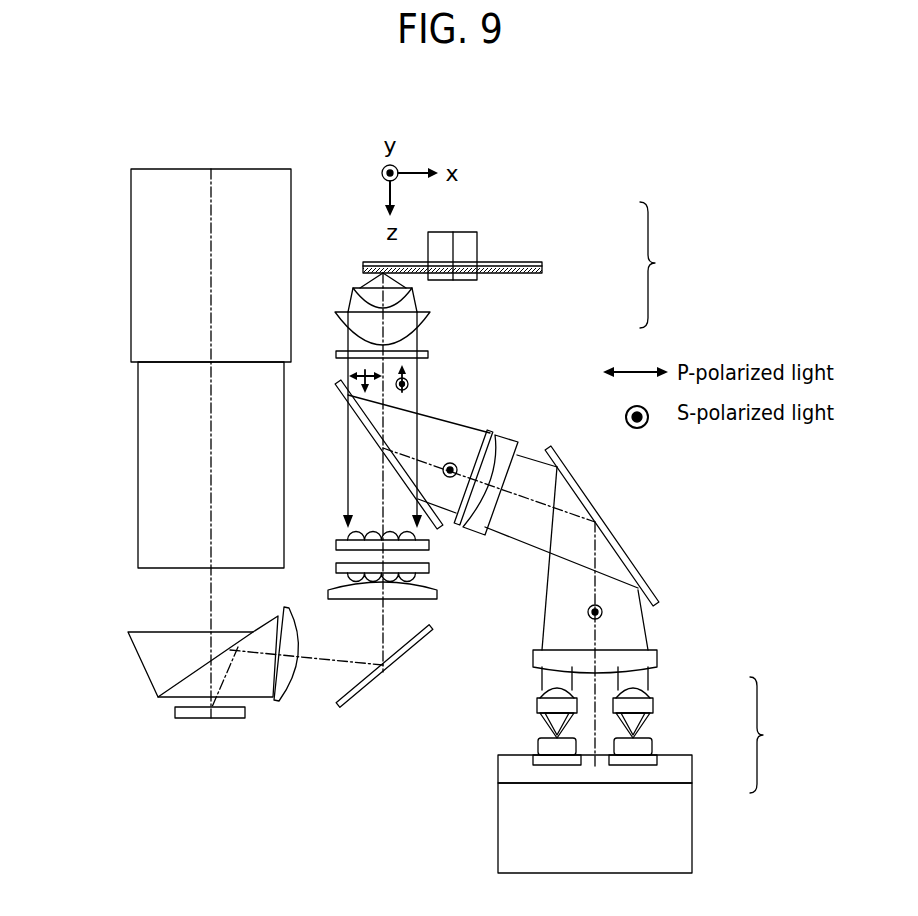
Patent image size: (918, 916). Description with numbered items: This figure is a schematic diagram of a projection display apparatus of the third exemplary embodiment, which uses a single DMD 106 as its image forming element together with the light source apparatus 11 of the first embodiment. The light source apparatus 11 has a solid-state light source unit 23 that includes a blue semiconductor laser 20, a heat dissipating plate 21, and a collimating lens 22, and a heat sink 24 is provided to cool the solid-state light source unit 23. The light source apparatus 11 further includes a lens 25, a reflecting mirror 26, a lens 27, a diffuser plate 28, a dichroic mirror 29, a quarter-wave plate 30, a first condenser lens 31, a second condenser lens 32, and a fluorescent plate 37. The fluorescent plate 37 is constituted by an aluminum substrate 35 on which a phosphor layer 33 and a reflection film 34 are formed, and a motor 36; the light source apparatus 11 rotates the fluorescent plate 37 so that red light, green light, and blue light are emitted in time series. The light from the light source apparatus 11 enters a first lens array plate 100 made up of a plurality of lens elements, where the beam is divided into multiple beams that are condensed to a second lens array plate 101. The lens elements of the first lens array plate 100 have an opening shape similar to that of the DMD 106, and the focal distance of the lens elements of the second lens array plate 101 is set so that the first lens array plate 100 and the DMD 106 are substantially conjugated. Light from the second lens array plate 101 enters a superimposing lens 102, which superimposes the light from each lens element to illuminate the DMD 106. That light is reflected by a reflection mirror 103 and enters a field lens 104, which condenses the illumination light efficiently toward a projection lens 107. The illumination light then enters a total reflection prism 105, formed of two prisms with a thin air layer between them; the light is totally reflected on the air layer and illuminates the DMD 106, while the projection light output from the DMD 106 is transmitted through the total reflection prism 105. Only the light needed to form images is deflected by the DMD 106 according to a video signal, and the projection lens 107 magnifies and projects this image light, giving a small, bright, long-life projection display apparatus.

The light source apparatus 11 is at (760, 493).
The blue semiconductor laser 20 is at (655, 743).
The heat dissipating plate 21 is at (677, 770).
The collimating lens 22 is at (655, 703).
The solid-state light source unit 23 is at (773, 735).
The heat sink 24 is at (677, 848).
The lens 25 is at (658, 657).
The reflecting mirror 26 is at (635, 572).
The lens 27 is at (517, 440).
The diffuser plate 28 is at (488, 432).
The dichroic mirror 29 is at (345, 392).
The quarter-wave plate 30 is at (428, 356).
The first condenser lens 31 is at (428, 320).
The second condenser lens 32 is at (350, 290).
The phosphor layer 33 is at (513, 274).
The reflection film 34 is at (543, 270).
The aluminum substrate 35 is at (543, 263).
The motor 36 is at (477, 243).
The fluorescent plate 37 is at (666, 265).
The first lens array plate 100 is at (432, 548).
The second lens array plate 101 is at (432, 573).
The superimposing lens 102 is at (437, 599).
The reflection mirror 103 is at (360, 695).
The field lens 104 is at (287, 697).
The total reflection prism 105 is at (137, 655).
The DMD 106 is at (177, 718).
The projection lens 107 is at (138, 536).